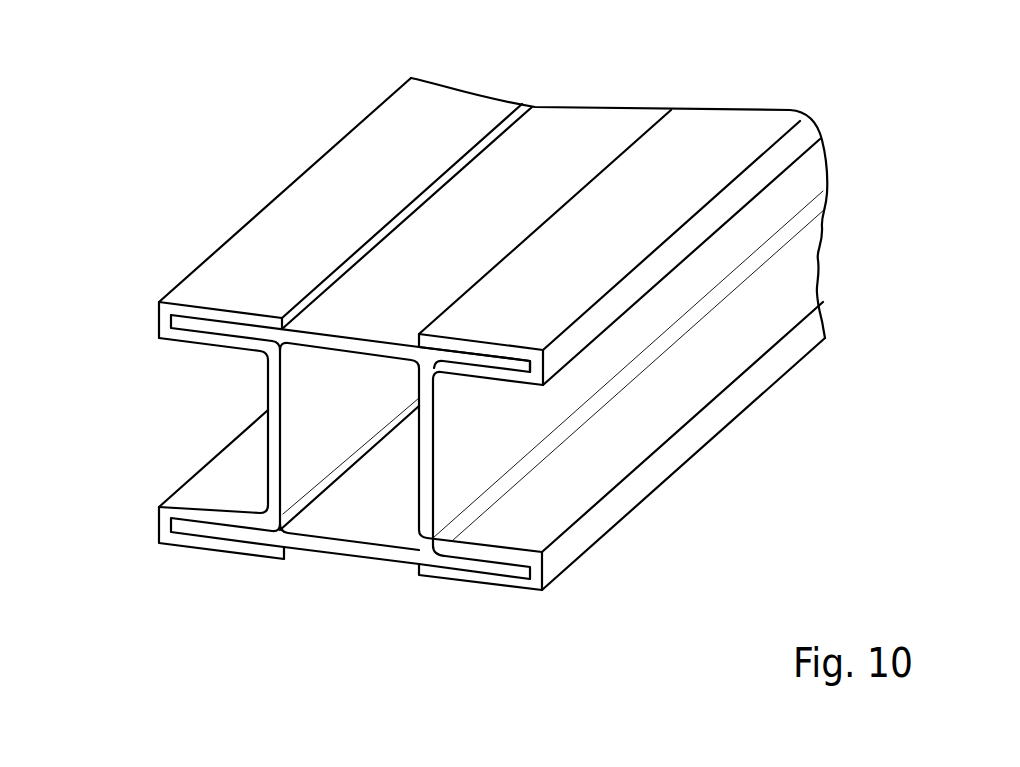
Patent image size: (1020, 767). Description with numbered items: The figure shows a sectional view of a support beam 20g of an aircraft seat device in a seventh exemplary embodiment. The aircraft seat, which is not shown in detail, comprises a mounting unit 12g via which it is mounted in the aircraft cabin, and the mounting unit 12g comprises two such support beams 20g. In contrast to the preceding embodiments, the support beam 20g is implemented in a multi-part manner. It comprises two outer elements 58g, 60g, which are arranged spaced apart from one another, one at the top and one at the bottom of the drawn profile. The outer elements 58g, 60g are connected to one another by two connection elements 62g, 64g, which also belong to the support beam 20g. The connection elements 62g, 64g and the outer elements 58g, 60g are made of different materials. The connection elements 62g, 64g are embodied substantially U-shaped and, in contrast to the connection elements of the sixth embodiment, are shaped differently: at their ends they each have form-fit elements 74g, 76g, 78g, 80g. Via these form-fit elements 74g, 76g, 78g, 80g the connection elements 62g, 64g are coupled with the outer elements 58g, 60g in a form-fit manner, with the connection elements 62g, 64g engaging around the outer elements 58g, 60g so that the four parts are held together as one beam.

The mounting unit 12g is at (252, 141).
The support beam 20g is at (293, 242).
The outer element 58g is at (507, 217).
The form-fit element 74g is at (170, 322).
The connection element 64g is at (268, 385).
The form-fit element 78g is at (172, 523).
The outer element 60g is at (352, 552).
The connection element 62g is at (463, 445).
The form-fit element 80g is at (545, 567).
The form-fit element 76g is at (528, 363).